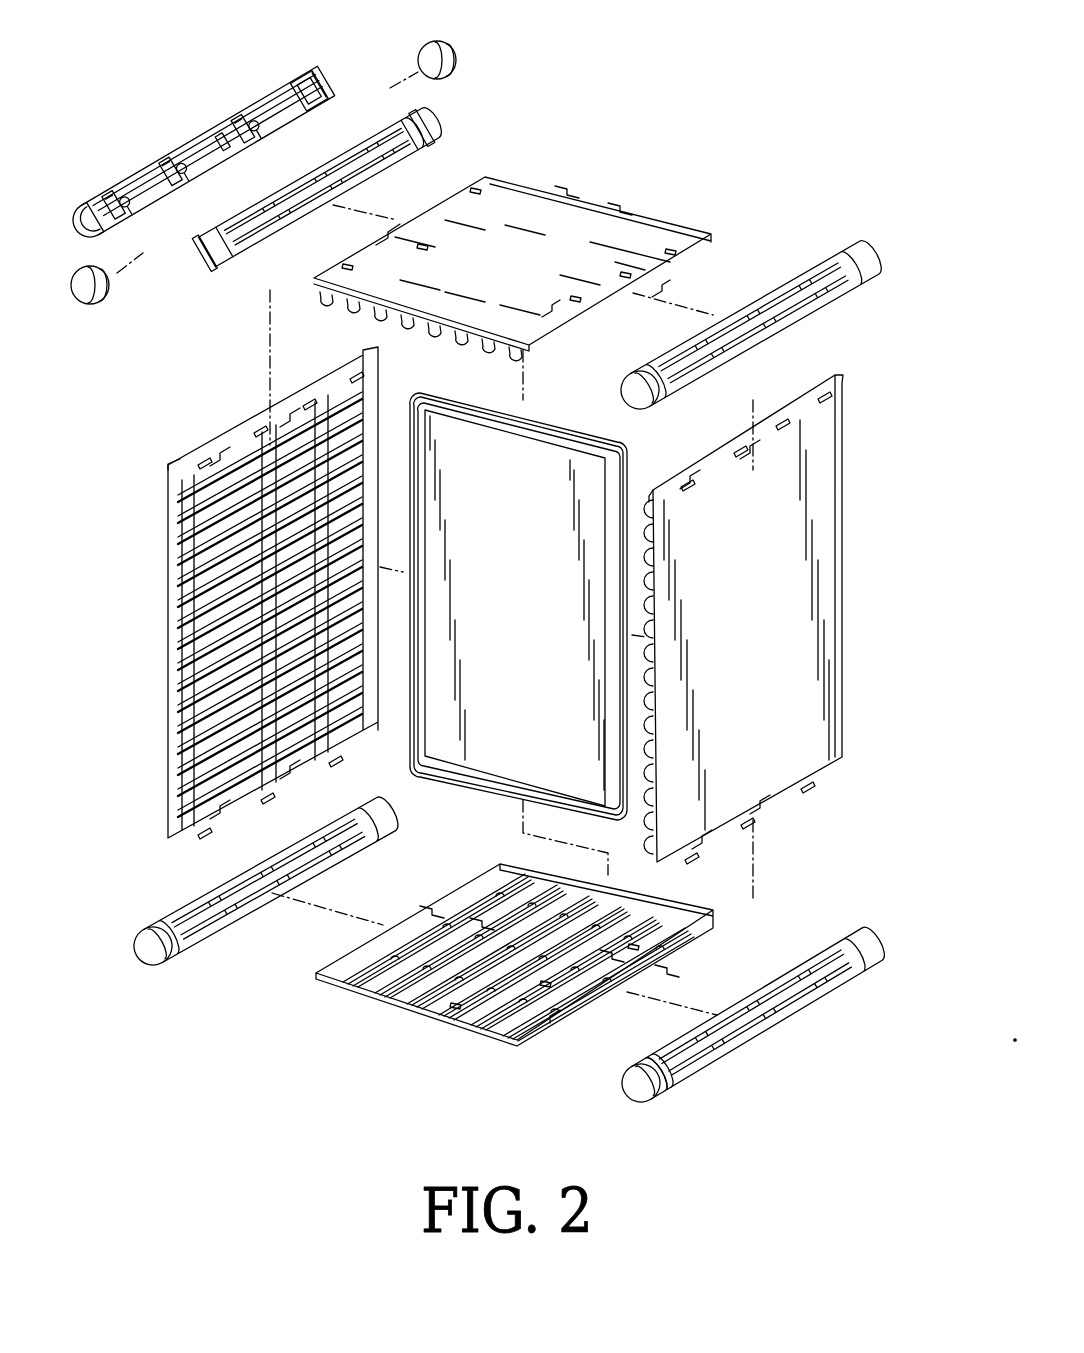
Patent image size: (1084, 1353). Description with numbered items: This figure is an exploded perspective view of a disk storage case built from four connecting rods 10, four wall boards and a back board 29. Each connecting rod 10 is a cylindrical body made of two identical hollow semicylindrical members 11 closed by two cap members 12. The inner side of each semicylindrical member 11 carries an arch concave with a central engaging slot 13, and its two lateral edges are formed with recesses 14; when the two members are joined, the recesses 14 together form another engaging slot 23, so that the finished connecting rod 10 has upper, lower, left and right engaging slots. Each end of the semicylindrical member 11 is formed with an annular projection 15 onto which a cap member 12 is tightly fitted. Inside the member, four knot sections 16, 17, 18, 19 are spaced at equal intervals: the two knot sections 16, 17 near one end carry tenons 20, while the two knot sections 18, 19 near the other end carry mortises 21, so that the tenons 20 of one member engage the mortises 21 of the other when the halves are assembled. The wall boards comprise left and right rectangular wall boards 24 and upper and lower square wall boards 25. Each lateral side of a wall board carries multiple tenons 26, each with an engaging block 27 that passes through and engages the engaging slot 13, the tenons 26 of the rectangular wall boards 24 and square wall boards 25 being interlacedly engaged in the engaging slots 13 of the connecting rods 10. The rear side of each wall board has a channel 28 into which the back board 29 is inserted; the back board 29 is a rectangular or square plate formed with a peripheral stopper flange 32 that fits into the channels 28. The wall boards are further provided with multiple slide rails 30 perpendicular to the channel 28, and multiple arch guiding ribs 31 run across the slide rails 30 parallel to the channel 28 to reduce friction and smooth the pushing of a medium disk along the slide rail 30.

The connecting rod 10 is at (185, 946).
The semicylindrical member 11 is at (250, 97).
The cap member 12 is at (458, 50).
The engaging slot 13 is at (840, 290).
The recess 14 is at (362, 146).
The annular projection 15 is at (90, 210).
The knot section 16 is at (110, 213).
The knot section 17 is at (175, 195).
The knot section 18 is at (243, 162).
The knot section 19 is at (257, 137).
The tenon 20 is at (128, 190).
The mortise 21 is at (307, 112).
The engaging slot 23 is at (810, 267).
The rectangular wall board 24 is at (820, 660).
The square wall board 25 is at (577, 203).
The tenon 26 is at (317, 273).
The engaging block 27 is at (342, 265).
The channel 28 is at (380, 373).
The back board 29 is at (523, 450).
The slide rail 30 is at (177, 525).
The arch guiding rib 31 is at (182, 690).
The stopper flange 32 is at (450, 413).